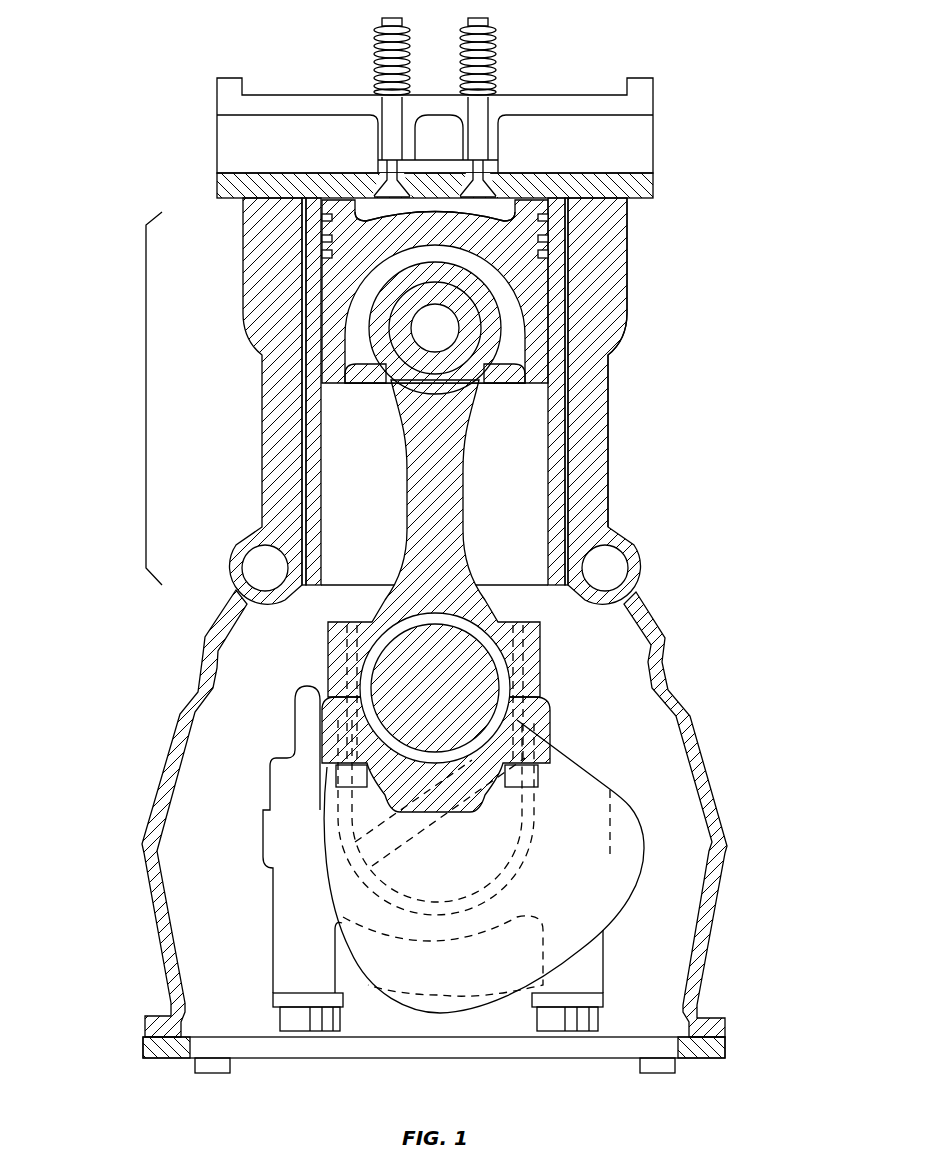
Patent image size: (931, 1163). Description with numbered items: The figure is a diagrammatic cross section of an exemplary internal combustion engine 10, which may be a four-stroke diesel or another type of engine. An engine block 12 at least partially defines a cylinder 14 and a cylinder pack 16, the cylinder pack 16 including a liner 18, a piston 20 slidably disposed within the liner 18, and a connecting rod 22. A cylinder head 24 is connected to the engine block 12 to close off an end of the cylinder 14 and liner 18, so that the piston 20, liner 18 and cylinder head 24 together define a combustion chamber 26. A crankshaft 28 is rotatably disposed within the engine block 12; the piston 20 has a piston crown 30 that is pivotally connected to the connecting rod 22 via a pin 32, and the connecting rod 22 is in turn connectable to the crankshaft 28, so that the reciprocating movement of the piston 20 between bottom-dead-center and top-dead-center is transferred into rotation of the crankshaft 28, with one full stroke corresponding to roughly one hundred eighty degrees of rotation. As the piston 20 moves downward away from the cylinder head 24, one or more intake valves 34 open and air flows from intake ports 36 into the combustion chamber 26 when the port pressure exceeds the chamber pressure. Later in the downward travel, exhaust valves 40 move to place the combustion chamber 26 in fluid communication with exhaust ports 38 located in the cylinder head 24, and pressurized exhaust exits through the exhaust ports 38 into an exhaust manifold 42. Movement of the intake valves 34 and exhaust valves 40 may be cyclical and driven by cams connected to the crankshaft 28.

The internal combustion engine 10 is at (714, 113).
The engine block 12 is at (593, 486).
The cylinder 14 is at (575, 413).
The cylinder pack 16 is at (146, 397).
The liner 18 is at (557, 350).
The piston 20 is at (353, 454).
The connecting rod 22 is at (448, 496).
The cylinder head 24 is at (650, 186).
The combustion chamber 26 is at (500, 163).
The crankshaft 28 is at (448, 669).
The piston crown 30 is at (376, 221).
The pin 32 is at (448, 338).
The intake valves 34 is at (392, 182).
The intake ports 36 is at (300, 400).
The exhaust ports 38 is at (497, 212).
The exhaust valves 40 is at (475, 182).
The exhaust manifold 42 is at (597, 128).